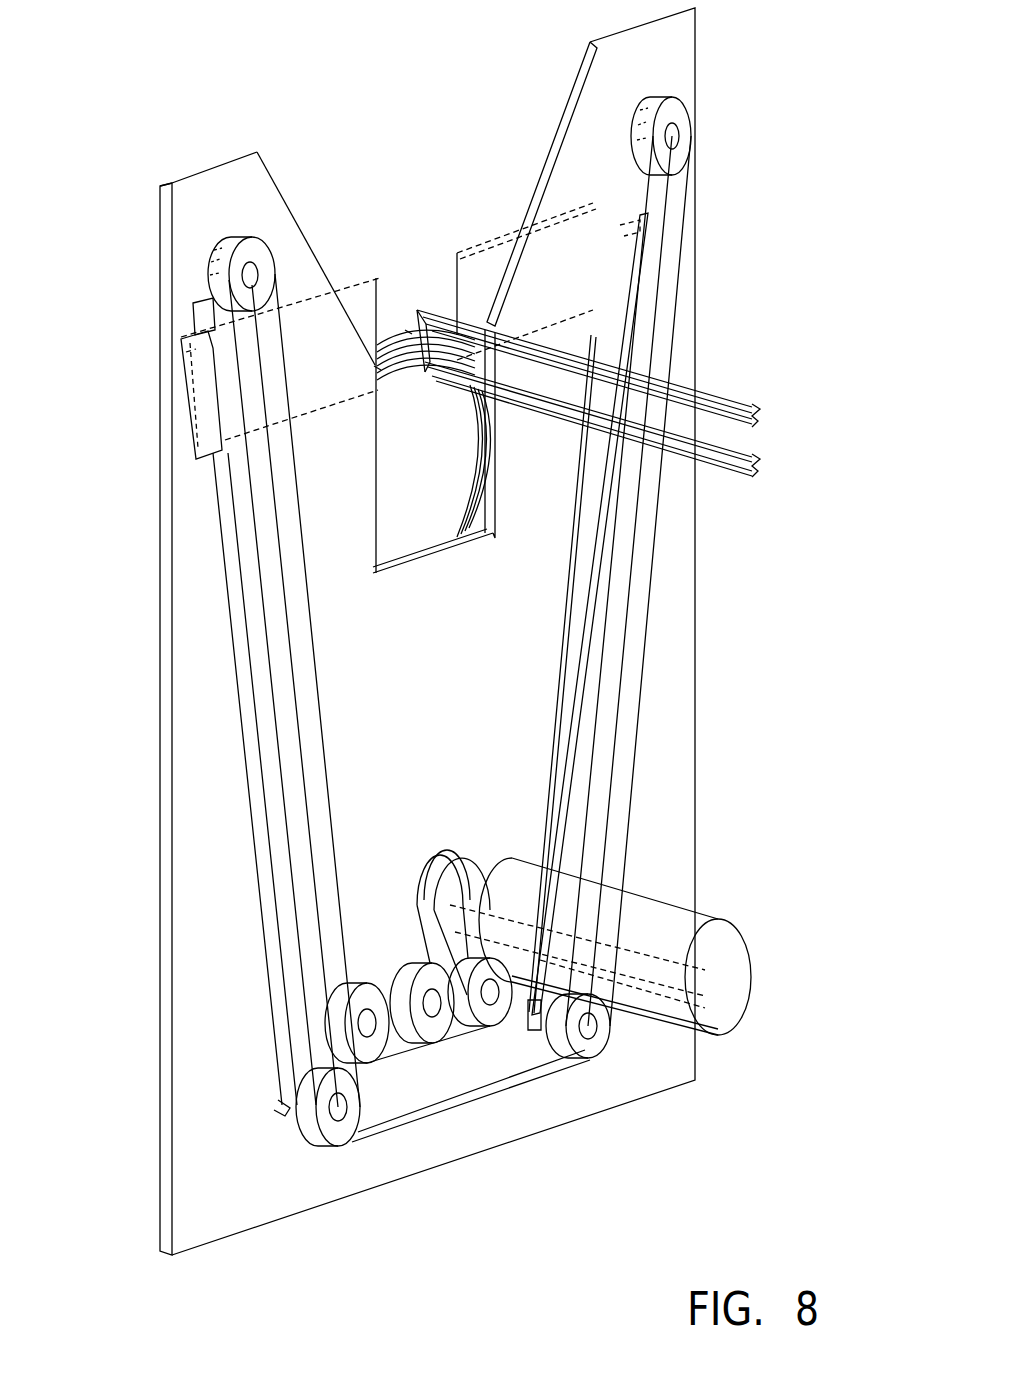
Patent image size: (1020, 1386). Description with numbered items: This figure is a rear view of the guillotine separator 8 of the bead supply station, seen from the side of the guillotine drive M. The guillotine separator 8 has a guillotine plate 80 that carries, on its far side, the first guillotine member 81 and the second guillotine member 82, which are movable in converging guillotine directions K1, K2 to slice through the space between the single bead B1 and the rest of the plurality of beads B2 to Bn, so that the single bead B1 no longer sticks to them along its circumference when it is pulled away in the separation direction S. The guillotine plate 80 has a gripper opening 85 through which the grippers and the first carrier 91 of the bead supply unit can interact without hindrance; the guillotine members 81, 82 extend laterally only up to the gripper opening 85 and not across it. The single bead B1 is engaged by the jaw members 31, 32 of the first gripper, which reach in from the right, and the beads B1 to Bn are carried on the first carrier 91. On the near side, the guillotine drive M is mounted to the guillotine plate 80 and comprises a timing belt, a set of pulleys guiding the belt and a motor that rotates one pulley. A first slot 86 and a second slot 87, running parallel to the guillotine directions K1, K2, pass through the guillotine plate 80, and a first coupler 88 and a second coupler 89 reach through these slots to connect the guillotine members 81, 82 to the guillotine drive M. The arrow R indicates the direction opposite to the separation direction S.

The guillotine separator 8 is at (133, 1091).
The jaw member 31 is at (735, 405).
The jaw member 32 is at (730, 460).
The guillotine plate 80 is at (267, 1202).
The first guillotine member 81 is at (490, 263).
The second guillotine member 82 is at (354, 302).
The gripper opening 85 is at (444, 496).
The first slot 86 is at (583, 483).
The second slot 87 is at (250, 815).
The first coupler 88 is at (607, 285).
The second coupler 89 is at (213, 412).
The first carrier 91 is at (409, 372).
The single bead B1 is at (377, 360).
The first bead of the rest of the plurality of beads B2 is at (406, 335).
The bead Bn is at (396, 330).
The first guillotine direction K1 is at (558, 560).
The second guillotine direction K2 is at (327, 627).
The guillotine drive M is at (466, 1116).
The return direction R is at (366, 109).
The separation direction S is at (384, 151).